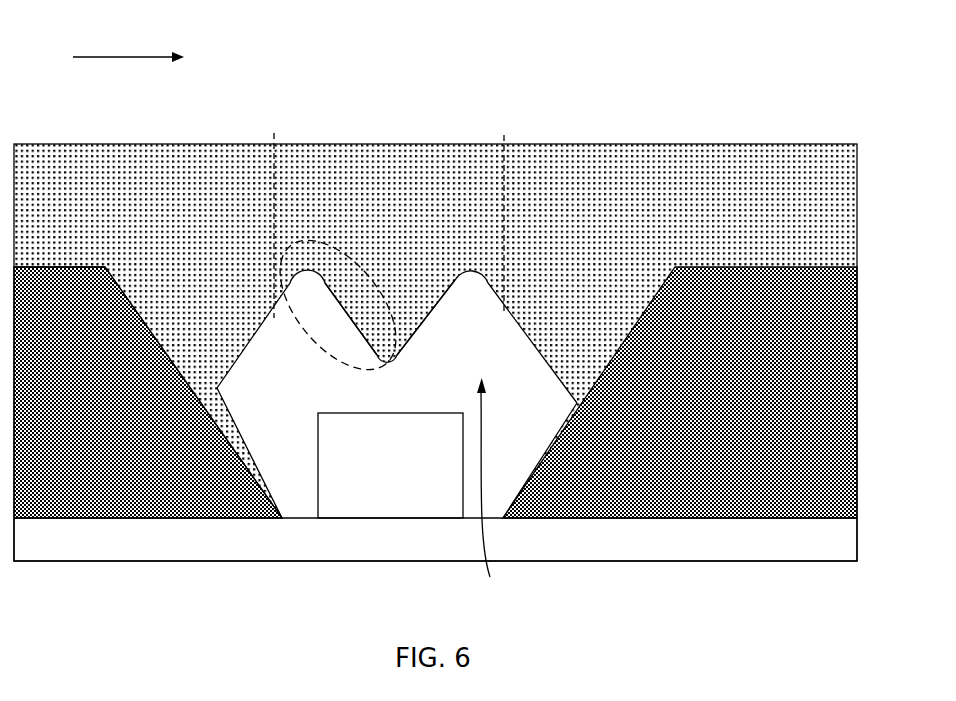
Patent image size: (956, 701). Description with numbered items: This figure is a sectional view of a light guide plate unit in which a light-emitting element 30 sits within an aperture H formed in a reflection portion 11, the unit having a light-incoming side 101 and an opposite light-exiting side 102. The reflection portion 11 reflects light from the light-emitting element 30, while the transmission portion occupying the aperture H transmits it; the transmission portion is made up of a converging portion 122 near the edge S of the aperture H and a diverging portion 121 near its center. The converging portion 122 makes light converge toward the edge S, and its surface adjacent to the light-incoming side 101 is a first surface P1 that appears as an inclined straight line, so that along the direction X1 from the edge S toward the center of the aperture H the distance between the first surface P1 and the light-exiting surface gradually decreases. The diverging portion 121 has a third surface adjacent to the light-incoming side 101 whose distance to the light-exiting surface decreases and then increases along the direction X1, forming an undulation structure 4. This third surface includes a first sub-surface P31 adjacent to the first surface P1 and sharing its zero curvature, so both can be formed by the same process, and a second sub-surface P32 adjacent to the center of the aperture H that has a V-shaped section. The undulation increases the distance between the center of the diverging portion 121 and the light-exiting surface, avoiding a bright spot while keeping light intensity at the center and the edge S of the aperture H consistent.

The light-exiting side 102 is at (762, 110).
The converging portion 122 is at (218, 330).
The reflection portion 11 is at (157, 463).
The edge of the aperture S is at (105, 265).
The first surface P1 is at (230, 450).
The diverging portion 121 is at (395, 330).
The first sub-surface P31 is at (280, 293).
The second sub-surface P32 is at (333, 277).
The undulation structure 4 is at (291, 240).
The light-emitting element 30 is at (426, 463).
The aperture H is at (487, 489).
The light-incoming side 101 is at (780, 575).
The direction from the edge of the aperture to the center of the aperture X1 is at (131, 43).